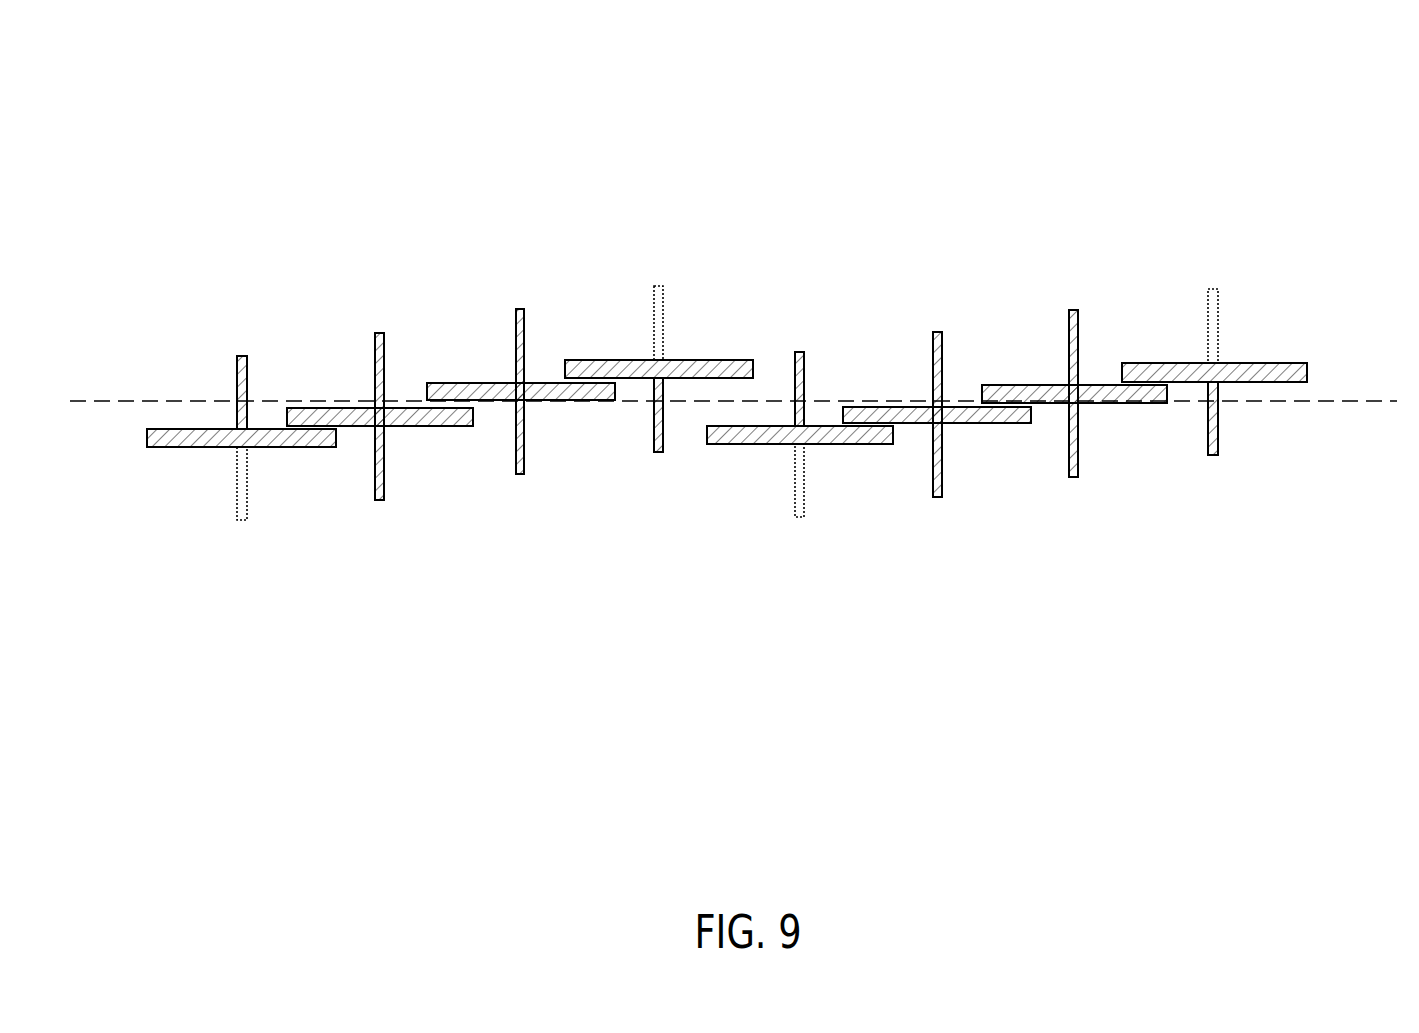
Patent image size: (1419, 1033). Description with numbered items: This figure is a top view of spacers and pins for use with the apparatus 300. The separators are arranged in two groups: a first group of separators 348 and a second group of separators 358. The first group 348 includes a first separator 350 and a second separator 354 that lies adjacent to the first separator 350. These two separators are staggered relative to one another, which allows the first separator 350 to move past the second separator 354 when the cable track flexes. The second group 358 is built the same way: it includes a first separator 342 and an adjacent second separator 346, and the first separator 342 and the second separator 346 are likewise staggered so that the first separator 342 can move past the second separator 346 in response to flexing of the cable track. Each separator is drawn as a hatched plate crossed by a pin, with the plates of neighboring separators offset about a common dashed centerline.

The apparatus 300 is at (1182, 102).
The first group of separators 348 is at (741, 500).
The second group of separators 358 is at (711, 305).
The first separator 350 is at (202, 428).
The second separator 354 is at (422, 412).
The first separator 342 is at (828, 443).
The second separator 346 is at (972, 424).